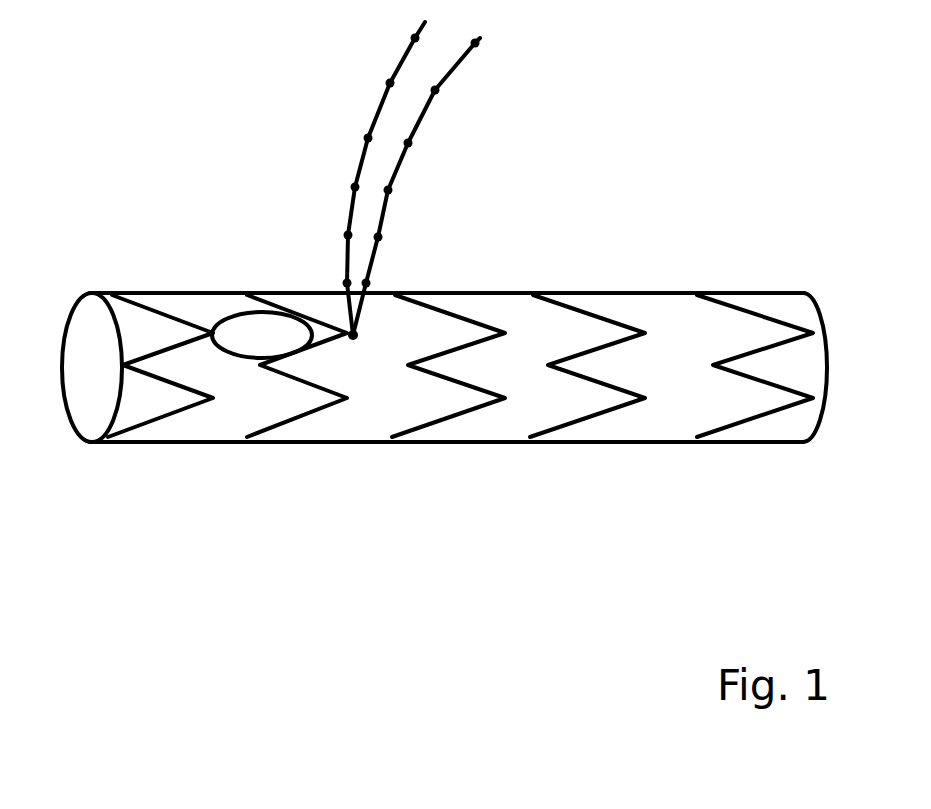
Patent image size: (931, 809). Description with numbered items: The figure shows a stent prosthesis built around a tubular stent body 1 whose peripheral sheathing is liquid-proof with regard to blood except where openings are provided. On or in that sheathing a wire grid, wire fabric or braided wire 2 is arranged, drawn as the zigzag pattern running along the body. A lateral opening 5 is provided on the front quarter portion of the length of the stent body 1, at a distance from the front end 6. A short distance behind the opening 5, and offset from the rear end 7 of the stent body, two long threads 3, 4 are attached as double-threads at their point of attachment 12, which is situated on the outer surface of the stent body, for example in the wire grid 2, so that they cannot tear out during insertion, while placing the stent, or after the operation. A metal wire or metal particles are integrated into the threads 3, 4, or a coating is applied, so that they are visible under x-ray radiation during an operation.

The tubular stent body 1 is at (375, 422).
The wire grid 2 is at (617, 407).
The thread 3 is at (402, 160).
The thread 4 is at (365, 130).
The lateral opening 5 is at (258, 335).
The front end 6 is at (137, 412).
The rear end 7 is at (800, 423).
The point of attachment 12 is at (360, 332).